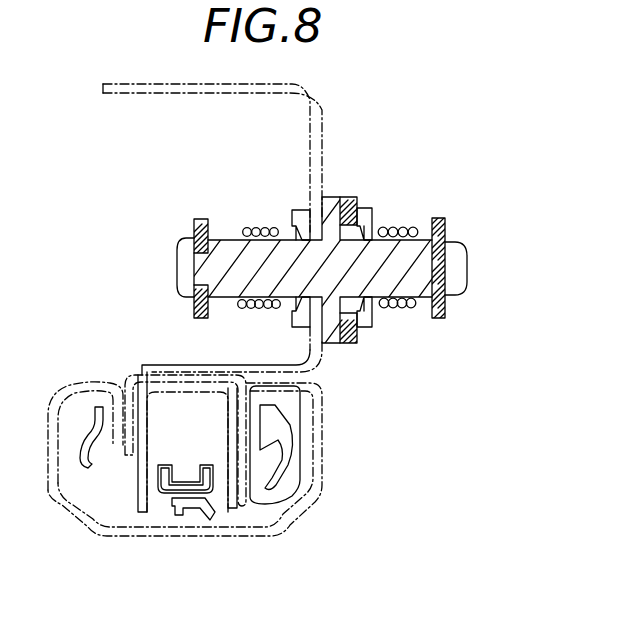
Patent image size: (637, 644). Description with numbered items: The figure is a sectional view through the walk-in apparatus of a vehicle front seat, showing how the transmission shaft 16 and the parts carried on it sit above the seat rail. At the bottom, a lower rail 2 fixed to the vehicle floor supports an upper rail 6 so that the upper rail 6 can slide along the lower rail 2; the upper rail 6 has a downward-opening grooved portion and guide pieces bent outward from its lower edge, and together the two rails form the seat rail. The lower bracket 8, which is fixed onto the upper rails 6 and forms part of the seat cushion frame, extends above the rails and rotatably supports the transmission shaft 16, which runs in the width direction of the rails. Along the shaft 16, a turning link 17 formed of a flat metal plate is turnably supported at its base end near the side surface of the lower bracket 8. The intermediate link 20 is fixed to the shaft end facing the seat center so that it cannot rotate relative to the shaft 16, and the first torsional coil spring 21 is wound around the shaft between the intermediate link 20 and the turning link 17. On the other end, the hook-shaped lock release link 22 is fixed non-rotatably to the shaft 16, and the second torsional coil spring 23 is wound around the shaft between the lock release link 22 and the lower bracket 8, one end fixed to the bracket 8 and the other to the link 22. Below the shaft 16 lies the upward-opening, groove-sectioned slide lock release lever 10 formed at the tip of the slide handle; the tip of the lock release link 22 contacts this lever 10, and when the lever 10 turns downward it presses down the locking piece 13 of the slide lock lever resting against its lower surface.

The lower rail 2 is at (300, 537).
The upper rail 6 is at (312, 386).
The lower bracket 8 is at (323, 111).
The slide lock release lever 10 is at (199, 465).
The locking piece 13 is at (181, 518).
The transmission shaft 16 is at (462, 266).
The turning link 17 is at (347, 197).
The intermediate link 20 is at (449, 312).
The first torsional coil spring 21 is at (393, 218).
The lock release link 22 is at (198, 218).
The second torsional coil spring 23 is at (252, 228).